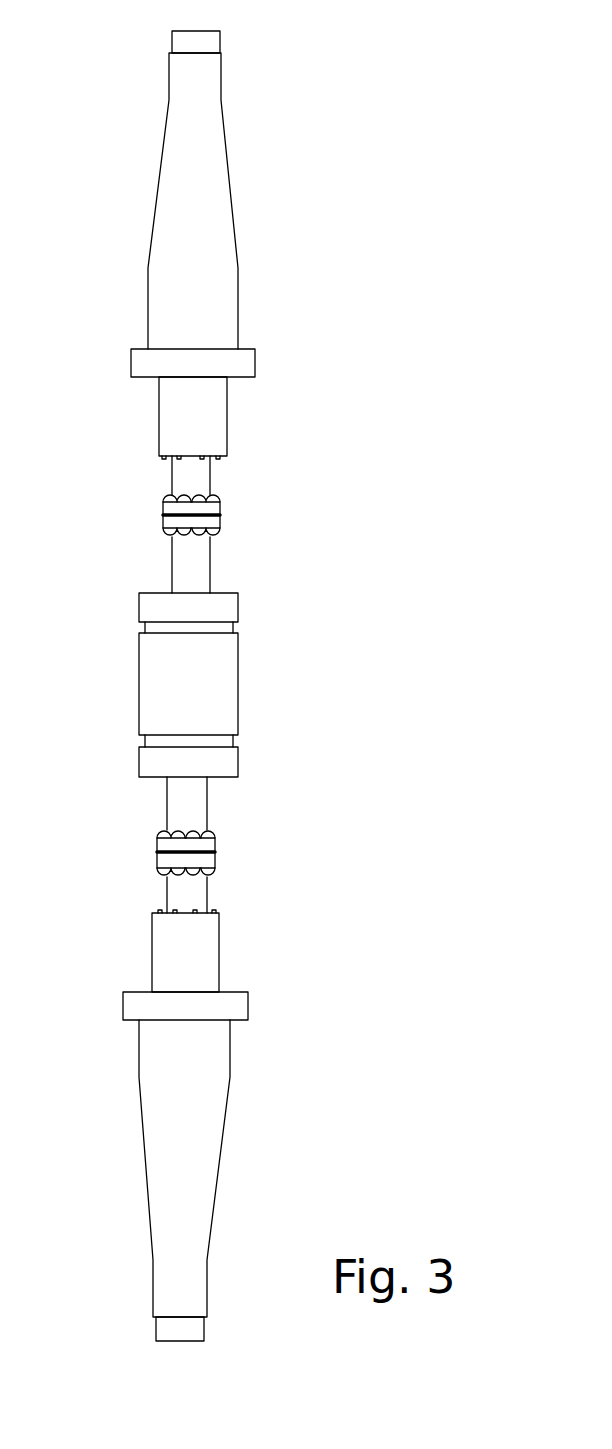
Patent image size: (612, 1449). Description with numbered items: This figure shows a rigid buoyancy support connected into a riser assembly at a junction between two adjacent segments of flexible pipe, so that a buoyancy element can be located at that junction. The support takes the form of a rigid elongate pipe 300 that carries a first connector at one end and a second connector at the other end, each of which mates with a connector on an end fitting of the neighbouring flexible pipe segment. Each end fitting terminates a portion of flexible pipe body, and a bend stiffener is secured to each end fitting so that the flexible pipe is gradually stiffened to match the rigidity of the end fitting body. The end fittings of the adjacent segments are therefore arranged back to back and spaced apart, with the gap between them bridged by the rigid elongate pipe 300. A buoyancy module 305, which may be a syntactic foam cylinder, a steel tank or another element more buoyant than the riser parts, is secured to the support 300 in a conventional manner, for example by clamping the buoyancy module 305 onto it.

The rigid elongate pipe 300 is at (180, 570).
The buoyancy module 305 is at (238, 678).